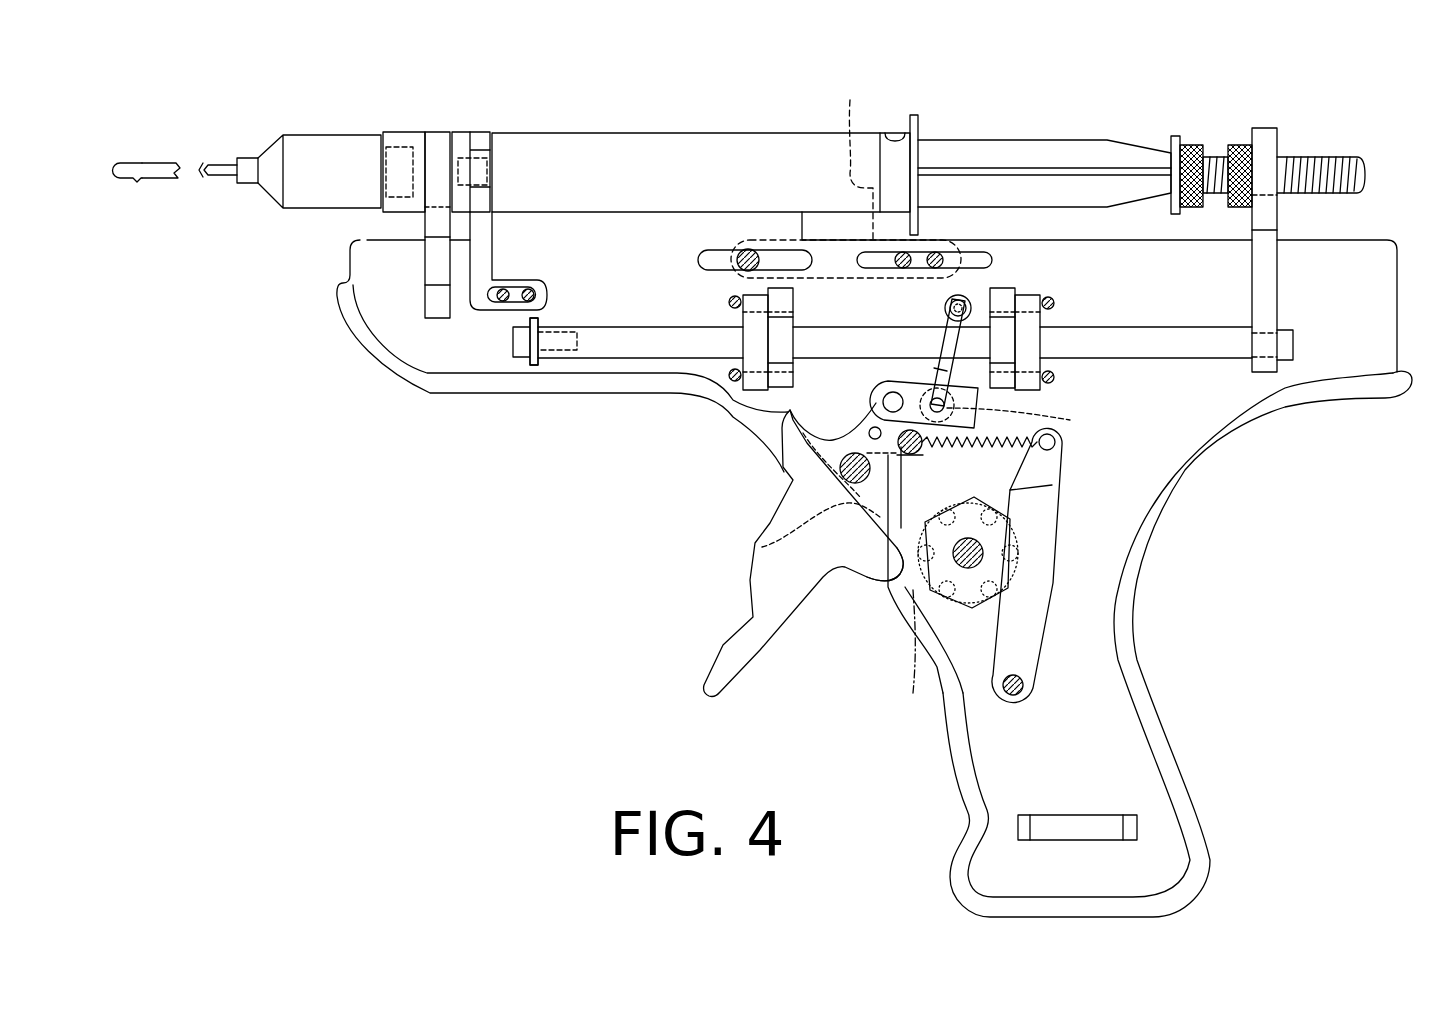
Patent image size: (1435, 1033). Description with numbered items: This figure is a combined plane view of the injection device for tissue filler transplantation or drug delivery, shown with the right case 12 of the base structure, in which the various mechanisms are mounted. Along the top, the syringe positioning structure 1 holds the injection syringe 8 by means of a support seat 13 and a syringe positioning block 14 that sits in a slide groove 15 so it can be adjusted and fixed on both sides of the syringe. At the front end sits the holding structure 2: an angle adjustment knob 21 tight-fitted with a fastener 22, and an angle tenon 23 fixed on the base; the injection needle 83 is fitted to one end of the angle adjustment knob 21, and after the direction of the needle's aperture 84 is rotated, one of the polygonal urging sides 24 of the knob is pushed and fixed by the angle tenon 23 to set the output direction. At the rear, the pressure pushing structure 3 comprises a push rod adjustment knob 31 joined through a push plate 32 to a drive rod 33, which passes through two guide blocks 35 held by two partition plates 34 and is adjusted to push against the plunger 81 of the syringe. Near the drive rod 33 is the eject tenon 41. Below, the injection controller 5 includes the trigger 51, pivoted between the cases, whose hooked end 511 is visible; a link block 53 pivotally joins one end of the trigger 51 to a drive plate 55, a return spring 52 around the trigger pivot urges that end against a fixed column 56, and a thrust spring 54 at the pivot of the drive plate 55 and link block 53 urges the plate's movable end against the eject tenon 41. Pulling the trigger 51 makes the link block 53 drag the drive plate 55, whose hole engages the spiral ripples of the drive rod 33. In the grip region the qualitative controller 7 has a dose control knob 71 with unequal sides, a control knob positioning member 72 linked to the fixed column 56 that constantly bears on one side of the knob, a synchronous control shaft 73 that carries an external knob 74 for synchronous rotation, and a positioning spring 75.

The syringe positioning structure 1 is at (889, 33).
The holding structure 2 is at (422, 28).
The pressure pushing structure 3 is at (1303, 45).
The injection controller 5 is at (627, 547).
The qualitative controller 7 is at (1198, 552).
The injection syringe 8 is at (614, 133).
The right case 12 is at (1167, 745).
The support seat 13 is at (747, 223).
The syringe positioning block 14 is at (848, 153).
The slide groove 15 is at (967, 258).
The angle adjustment knob 21 is at (405, 130).
The fastener 22 is at (437, 263).
The angle tenon 23 is at (482, 262).
The polygonal urging sides 24 is at (480, 131).
The push rod adjustment knob 31 is at (1193, 145).
The push plate 32 is at (1265, 136).
The drive rod 33 is at (1202, 347).
The partition plates 34 is at (1003, 296).
The guide blocks 35 is at (1030, 325).
The eject tenon 41 is at (945, 305).
The trigger 51 is at (753, 617).
The trigger hook 511 is at (880, 587).
The return spring 52 is at (762, 548).
The link block 53 is at (977, 396).
The thrust spring 54 is at (1029, 421).
The drive plate 55 is at (935, 340).
The fixed column 56 is at (913, 457).
The dose control knob 71 is at (907, 640).
The control knob positioning member 72 is at (1028, 633).
The synchronous control shaft 73 is at (985, 553).
The knob 74 is at (914, 661).
The positioning spring 75 is at (1037, 457).
The plunger 81 is at (1069, 160).
The injection needle 83 is at (163, 160).
The aperture 84 is at (133, 180).